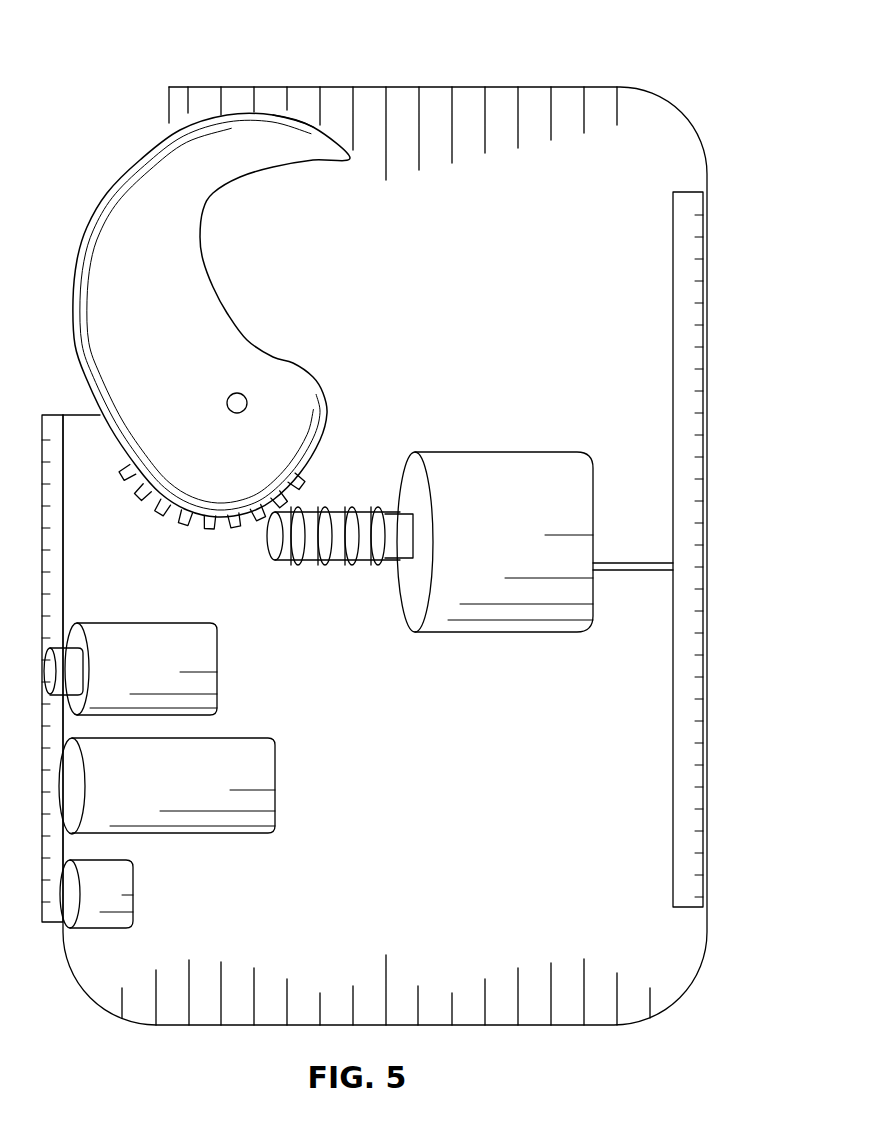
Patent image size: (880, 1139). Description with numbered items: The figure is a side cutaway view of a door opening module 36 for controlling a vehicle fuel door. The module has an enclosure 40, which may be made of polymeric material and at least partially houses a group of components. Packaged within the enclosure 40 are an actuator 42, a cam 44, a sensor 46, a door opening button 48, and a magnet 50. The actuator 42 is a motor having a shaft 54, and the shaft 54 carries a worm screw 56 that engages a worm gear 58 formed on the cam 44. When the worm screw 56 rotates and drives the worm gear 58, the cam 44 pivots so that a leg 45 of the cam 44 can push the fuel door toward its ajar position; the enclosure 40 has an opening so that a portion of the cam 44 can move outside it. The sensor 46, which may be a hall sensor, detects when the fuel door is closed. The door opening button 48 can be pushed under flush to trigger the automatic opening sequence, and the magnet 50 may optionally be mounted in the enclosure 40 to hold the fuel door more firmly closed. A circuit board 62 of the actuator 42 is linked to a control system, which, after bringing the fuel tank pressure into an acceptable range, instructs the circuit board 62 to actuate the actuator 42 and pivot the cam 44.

The door opening module 36 is at (113, 48).
The enclosure 40 is at (685, 128).
The actuator 42 is at (543, 610).
The cam 44 is at (135, 317).
The leg 45 is at (280, 140).
The sensor 46 is at (262, 800).
The door opening button 48 is at (207, 658).
The magnet 50 is at (118, 885).
The shaft 54 is at (400, 508).
The worm screw 56 is at (335, 560).
The worm gear 58 is at (210, 532).
The circuit board 62 is at (695, 555).